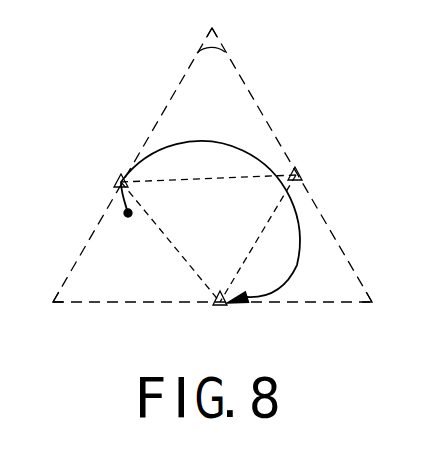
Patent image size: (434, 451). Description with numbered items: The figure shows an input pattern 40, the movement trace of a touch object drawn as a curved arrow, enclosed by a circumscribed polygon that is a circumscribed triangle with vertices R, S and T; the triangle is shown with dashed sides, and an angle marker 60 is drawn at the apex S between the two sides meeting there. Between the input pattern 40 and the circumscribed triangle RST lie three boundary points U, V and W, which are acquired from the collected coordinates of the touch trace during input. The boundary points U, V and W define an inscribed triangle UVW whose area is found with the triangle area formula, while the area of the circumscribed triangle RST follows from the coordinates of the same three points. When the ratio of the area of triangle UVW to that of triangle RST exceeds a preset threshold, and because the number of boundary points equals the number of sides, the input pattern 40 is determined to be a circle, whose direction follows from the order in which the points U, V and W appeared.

The input pattern 40 is at (260, 134).
The 60 degree angle marker 60 is at (211, 66).
The vertex S of circumscribed triangle RST S is at (212, 20).
The vertex R of circumscribed triangle RST R is at (46, 305).
The vertex T of circumscribed triangle RST T is at (376, 305).
The boundary point U is at (112, 178).
The boundary point V is at (306, 173).
The boundary point W is at (223, 314).